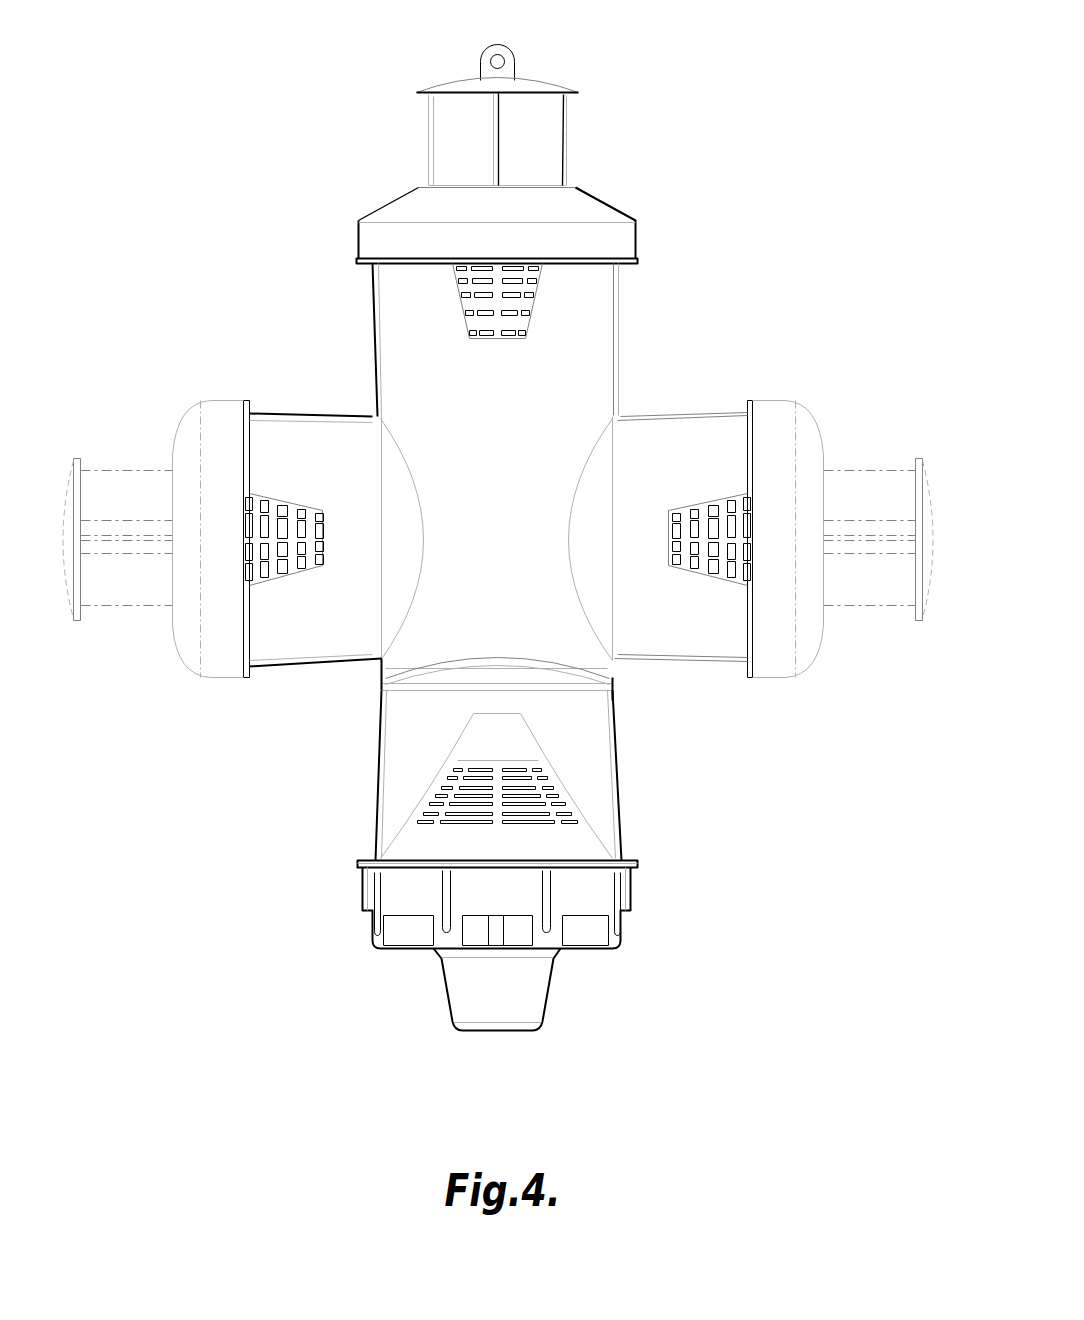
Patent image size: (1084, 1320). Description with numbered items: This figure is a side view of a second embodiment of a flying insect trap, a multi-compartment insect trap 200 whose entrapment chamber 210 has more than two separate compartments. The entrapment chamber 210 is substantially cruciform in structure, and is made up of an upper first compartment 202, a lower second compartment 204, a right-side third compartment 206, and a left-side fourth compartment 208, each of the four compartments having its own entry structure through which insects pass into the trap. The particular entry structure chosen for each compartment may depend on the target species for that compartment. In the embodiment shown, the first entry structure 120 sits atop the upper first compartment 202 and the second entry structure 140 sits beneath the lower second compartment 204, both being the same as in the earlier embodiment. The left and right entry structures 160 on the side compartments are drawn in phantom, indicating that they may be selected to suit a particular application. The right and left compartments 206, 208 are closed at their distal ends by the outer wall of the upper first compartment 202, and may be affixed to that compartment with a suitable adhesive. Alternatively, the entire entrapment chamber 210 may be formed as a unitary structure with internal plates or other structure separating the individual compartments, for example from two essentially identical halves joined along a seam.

The multi-compartment insect trap 200 is at (748, 89).
The first entry structure 120 is at (607, 196).
The upper first compartment 202 is at (604, 313).
The entrapment chamber 210 is at (620, 366).
The right-side third compartment 206 is at (727, 420).
The left-side fourth compartment 208 is at (352, 643).
The left and right entry structures 160 is at (179, 647).
The lower second compartment 204 is at (598, 778).
The second entry structure 140 is at (632, 890).